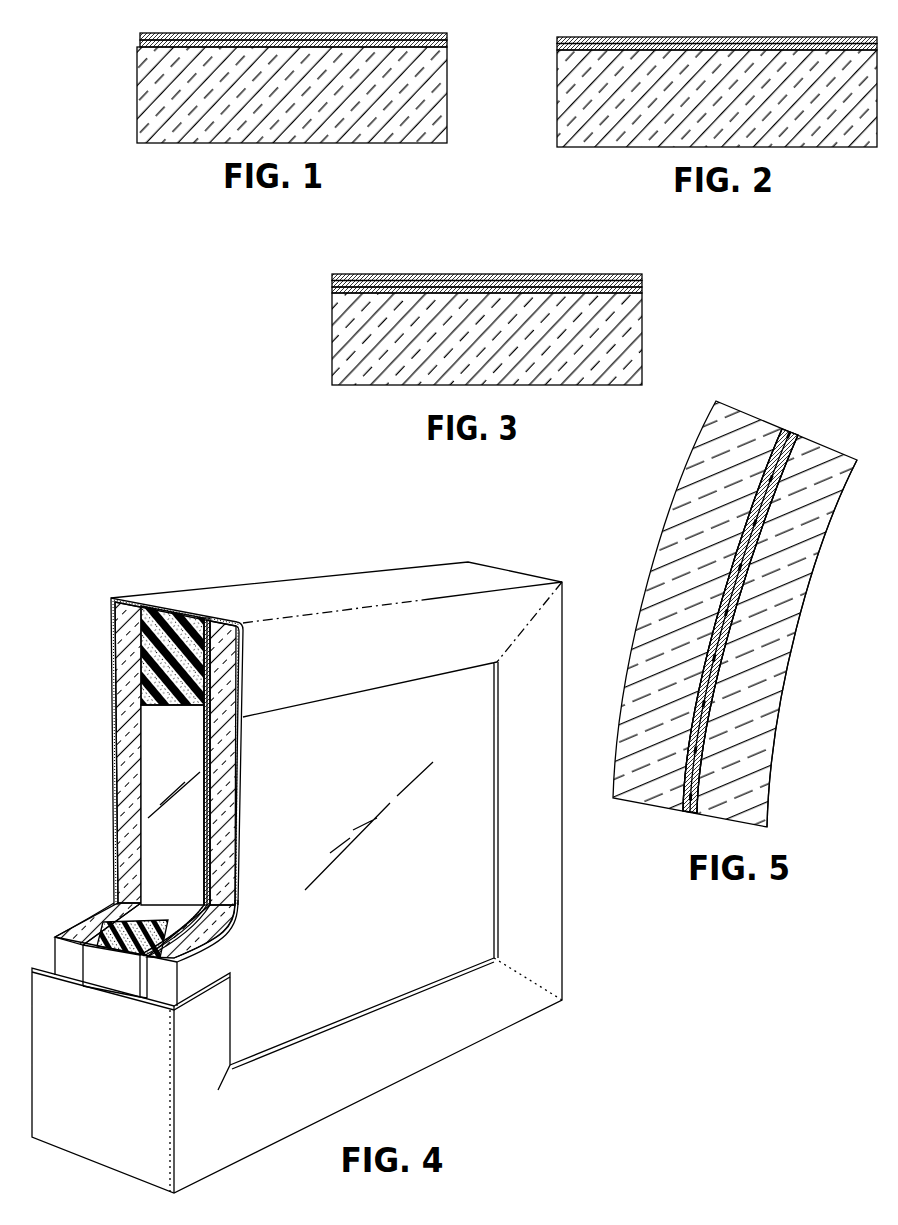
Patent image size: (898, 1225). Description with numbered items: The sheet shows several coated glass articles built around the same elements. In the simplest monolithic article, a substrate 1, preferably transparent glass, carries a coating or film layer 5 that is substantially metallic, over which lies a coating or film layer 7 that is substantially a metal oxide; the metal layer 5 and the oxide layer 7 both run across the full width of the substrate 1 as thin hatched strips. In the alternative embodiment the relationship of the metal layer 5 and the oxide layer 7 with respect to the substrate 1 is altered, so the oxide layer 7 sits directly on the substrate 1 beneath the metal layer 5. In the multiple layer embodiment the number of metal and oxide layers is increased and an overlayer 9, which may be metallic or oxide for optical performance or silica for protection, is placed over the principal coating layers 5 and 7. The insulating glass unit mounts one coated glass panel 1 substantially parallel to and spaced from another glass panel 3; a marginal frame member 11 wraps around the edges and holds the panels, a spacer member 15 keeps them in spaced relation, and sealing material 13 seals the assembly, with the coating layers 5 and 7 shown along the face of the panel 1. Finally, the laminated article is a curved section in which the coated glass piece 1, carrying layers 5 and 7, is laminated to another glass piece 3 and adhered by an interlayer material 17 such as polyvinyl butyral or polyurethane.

In FIG. 1, the substrate 1 is at (140, 92).
In FIG. 2, the substrate 1 is at (560, 96).
In FIG. 3, the substrate 1 is at (333, 355).
In FIG. 5, the substrate 1 is at (675, 495).
In FIG. 4, the substrate 1 is at (384, 896).
In FIG. 5, the glass panel 3 is at (811, 554).
In FIG. 4, the glass panel 3 is at (114, 812).
In FIG. 1, the metal layer 5 is at (141, 44).
In FIG. 2, the metal layer 5 is at (560, 38).
In FIG. 3, the metal layer 5 is at (333, 291).
In FIG. 5, the metal layer 5 is at (784, 430).
In FIG. 4, the metal layer 5 is at (211, 863).
In FIG. 1, the oxide layer 7 is at (141, 34).
In FIG. 2, the oxide layer 7 is at (560, 47).
In FIG. 3, the oxide layer 7 is at (333, 284).
In FIG. 5, the oxide layer 7 is at (796, 432).
In FIG. 4, the oxide layer 7 is at (205, 856).
In FIG. 3, the overlayer 9 is at (333, 275).
In FIG. 4, the marginal frame member 11 is at (250, 592).
In FIG. 4, the sealing material 13 is at (141, 655).
In FIG. 4, the spacer member 15 is at (178, 702).
In FIG. 5, the interlayer material 17 is at (796, 442).